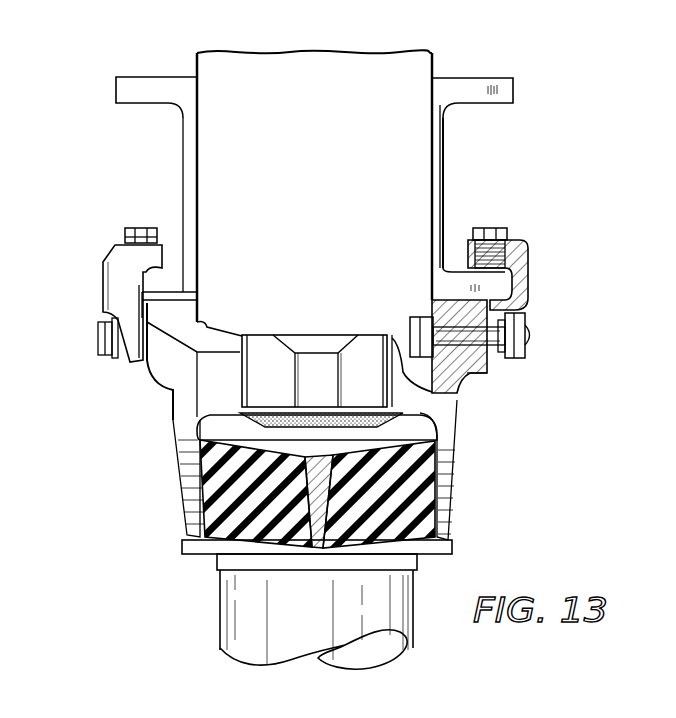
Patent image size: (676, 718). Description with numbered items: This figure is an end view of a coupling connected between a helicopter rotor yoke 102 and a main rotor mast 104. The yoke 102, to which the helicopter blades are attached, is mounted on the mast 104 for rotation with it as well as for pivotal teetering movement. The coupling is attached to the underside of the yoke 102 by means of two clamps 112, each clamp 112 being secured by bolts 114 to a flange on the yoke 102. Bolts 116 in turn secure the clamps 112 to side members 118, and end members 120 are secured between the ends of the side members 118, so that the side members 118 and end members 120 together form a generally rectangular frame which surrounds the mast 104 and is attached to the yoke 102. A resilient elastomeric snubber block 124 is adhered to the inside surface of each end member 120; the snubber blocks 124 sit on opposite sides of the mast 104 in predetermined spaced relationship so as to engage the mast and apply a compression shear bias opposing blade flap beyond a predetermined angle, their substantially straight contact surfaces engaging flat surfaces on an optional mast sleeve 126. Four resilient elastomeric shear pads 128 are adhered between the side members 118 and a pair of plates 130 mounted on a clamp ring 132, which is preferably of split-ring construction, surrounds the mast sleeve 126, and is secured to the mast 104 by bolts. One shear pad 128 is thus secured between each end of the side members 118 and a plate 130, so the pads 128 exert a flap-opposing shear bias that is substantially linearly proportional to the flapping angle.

The rotor yoke 102 is at (468, 88).
The main rotor mast 104 is at (248, 621).
The clamp 112 is at (118, 272).
The bolt 114 is at (138, 228).
The bolt 116 is at (100, 338).
The side member 118 is at (463, 368).
The end member 120 is at (268, 348).
The resilient elastomeric snubber block 124 is at (323, 426).
The mast sleeve 126 is at (393, 434).
The resilient elastomeric shear pad 128 is at (215, 488).
The plate 130 is at (322, 545).
The clamp ring 132 is at (192, 545).